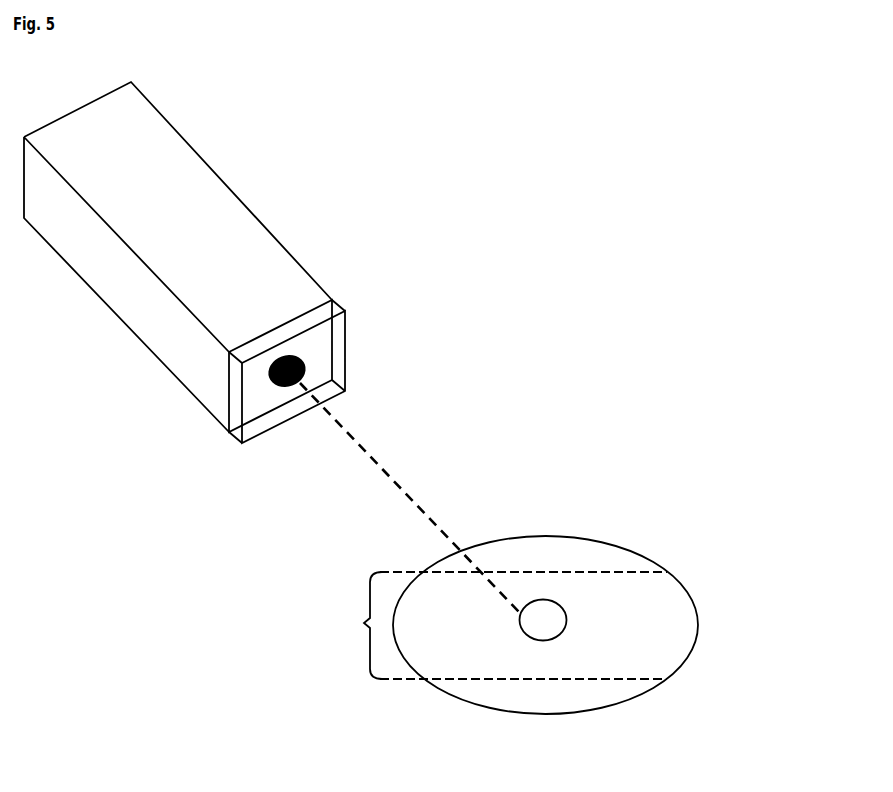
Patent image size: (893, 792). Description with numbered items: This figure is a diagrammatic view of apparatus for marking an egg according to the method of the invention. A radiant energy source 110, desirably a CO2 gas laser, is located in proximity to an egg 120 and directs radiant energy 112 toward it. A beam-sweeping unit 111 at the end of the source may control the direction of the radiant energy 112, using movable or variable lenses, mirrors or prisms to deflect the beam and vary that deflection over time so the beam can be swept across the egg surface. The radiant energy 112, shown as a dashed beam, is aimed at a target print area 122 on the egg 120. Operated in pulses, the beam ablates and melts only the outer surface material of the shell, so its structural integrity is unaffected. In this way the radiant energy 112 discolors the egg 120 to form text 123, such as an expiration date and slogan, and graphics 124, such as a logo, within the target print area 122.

The radiant energy source 110 is at (262, 213).
The beam-sweeping unit 111 is at (350, 350).
The radiant energy 112 is at (392, 472).
The egg 120 is at (639, 546).
The target print area 122 is at (503, 625).
The text 123 is at (590, 592).
The graphics 124 is at (614, 619).